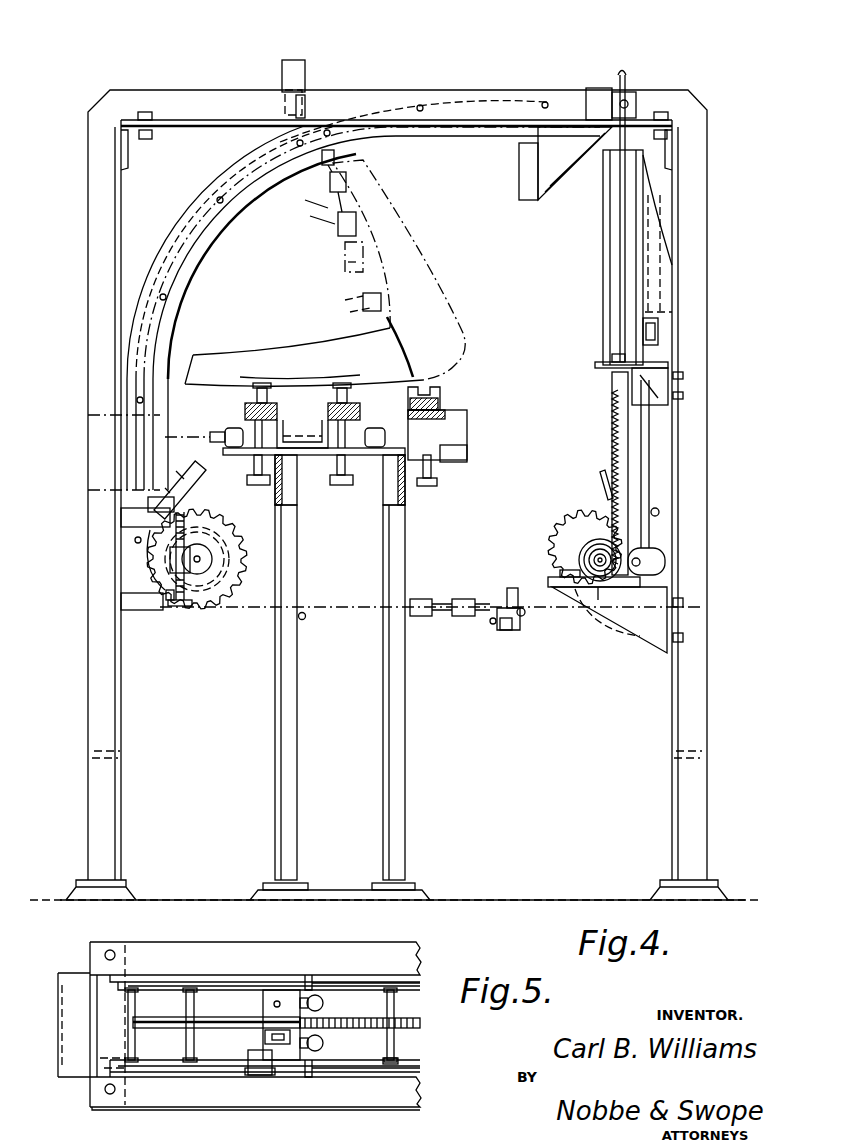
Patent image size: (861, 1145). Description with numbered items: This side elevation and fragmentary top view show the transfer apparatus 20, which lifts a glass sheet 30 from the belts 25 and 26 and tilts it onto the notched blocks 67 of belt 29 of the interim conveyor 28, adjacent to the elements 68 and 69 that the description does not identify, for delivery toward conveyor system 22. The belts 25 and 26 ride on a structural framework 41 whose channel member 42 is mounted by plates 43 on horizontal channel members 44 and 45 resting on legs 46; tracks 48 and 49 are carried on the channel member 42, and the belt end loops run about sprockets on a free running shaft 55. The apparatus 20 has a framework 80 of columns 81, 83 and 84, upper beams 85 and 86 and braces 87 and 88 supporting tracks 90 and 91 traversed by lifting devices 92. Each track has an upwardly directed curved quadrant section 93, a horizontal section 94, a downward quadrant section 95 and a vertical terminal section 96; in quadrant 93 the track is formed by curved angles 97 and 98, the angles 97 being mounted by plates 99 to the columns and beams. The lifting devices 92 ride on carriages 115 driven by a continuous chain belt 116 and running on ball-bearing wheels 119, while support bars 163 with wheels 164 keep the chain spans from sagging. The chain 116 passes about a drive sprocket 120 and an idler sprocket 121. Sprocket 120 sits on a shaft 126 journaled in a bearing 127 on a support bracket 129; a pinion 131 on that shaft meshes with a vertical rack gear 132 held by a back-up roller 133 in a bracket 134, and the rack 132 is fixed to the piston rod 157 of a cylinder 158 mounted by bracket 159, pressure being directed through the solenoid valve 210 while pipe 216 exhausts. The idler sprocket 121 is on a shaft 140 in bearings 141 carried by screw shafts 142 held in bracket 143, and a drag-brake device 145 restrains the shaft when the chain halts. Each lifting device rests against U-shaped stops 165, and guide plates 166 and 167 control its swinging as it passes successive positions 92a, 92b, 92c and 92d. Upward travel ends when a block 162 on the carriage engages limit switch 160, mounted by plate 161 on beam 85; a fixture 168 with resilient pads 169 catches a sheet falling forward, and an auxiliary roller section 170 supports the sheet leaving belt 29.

In FIG. 4, the transfer apparatus 20 is at (143, 78).
In FIG. 4, the conveyor system 22 is at (361, 304).
In FIG. 4, the belt 25 is at (253, 393).
In FIG. 4, the belt 26 is at (351, 393).
In FIG. 4, the interim conveyor 28 is at (444, 396).
In FIG. 4, the belt 29 is at (446, 406).
In FIG. 4, the glass sheet 30 is at (262, 352).
In FIG. 4, the structural framework 41 is at (298, 542).
In FIG. 4, the channel member 42 is at (300, 457).
In FIG. 4, the plates 43 is at (360, 457).
In FIG. 4, the channel member 44 is at (292, 492).
In FIG. 4, the channel member 45 is at (405, 492).
In FIG. 4, the legs or pedestals 46 is at (298, 578).
In FIG. 4, the track 48 is at (245, 410).
In FIG. 4, the track 49 is at (360, 410).
In FIG. 4, the free running shaft 55 is at (300, 428).
In FIG. 4, the notched blocks 67 is at (440, 390).
In FIG. 4, the clamp housing 68 is at (467, 422).
In FIG. 4, the clamp base 69 is at (444, 440).
In FIG. 4, the framework 80 is at (105, 100).
In FIG. 5, the framework 80 is at (75, 960).
In FIG. 4, the column 81 is at (707, 208).
In FIG. 4, the column 83 is at (105, 160).
In FIG. 5, the column 83 is at (90, 1088).
In FIG. 5, the column 84 is at (58, 972).
In FIG. 4, the beam 85 is at (228, 100).
In FIG. 5, the beam 85 is at (135, 1090).
In FIG. 5, the beam 86 is at (245, 965).
In FIG. 4, the braces 87 is at (131, 147).
In FIG. 5, the braces 87 is at (110, 1010).
In FIG. 4, the braces 88 is at (100, 752).
In FIG. 5, the braces 88 is at (70, 1022).
In FIG. 4, the track 90 is at (213, 192).
In FIG. 5, the track 90 is at (185, 1072).
In FIG. 5, the track 91 is at (175, 980).
In FIG. 5, the lifting devices 92 is at (324, 1003).
In FIG. 4, the lifting devices 92a is at (198, 430).
In FIG. 4, the lifting devices 92b is at (340, 232).
In FIG. 4, the lifting devices 92c is at (659, 331).
In FIG. 4, the lifting devices 92d is at (470, 618).
In FIG. 4, the curved quadrant section 93 is at (201, 262).
In FIG. 4, the horizontally disposed section 94 is at (487, 100).
In FIG. 4, the curved quadrant section 95 is at (651, 197).
In FIG. 4, the terminal section 96 is at (660, 312).
In FIG. 4, the angle 97 is at (218, 236).
In FIG. 5, the angle 97 is at (355, 988).
In FIG. 4, the angle 98 is at (182, 228).
In FIG. 5, the angle 98 is at (307, 985).
In FIG. 4, the plates 99 is at (118, 442).
In FIG. 4, the carriage 115 is at (500, 610).
In FIG. 5, the carriage 115 is at (270, 1010).
In FIG. 4, the chain belt 116 is at (349, 605).
In FIG. 5, the chain belt 116 is at (145, 1029).
In FIG. 4, the ball-bearing wheels 119 is at (524, 616).
In FIG. 4, the sprocket 120 is at (588, 520).
In FIG. 4, the sprocket 121 is at (233, 545).
In FIG. 4, the shaft 126 is at (587, 546).
In FIG. 4, the bearing 127 is at (580, 566).
In FIG. 4, the support bracket 129 is at (645, 590).
In FIG. 4, the pinion 131 is at (598, 582).
In FIG. 4, the rack gear 132 is at (612, 402).
In FIG. 4, the back-up flanged roller 133 is at (600, 590).
In FIG. 4, the bracket 134 is at (652, 560).
In FIG. 4, the shaft 140 is at (202, 562).
In FIG. 4, the bearings 141 is at (197, 572).
In FIG. 4, the screw shafts 142 is at (180, 606).
In FIG. 4, the bracket 143 is at (140, 601).
In FIG. 4, the drag-brake device 145 is at (222, 522).
In FIG. 4, the piston rod 157 is at (606, 371).
In FIG. 4, the cylinder 158 is at (610, 257).
In FIG. 4, the bracket 159 is at (668, 380).
In FIG. 4, the limit switch 160 is at (310, 75).
In FIG. 5, the limit switch 160 is at (262, 1062).
In FIG. 4, the plate 161 is at (292, 70).
In FIG. 5, the plate 161 is at (250, 1075).
In FIG. 4, the actuator block 162 is at (505, 631).
In FIG. 5, the actuator block 162 is at (265, 1036).
In FIG. 5, the support bars 163 is at (135, 1005).
In FIG. 4, the ball-bearing wheels 164 is at (420, 103).
In FIG. 5, the ball-bearing wheels 164 is at (396, 1060).
In FIG. 4, the U-shaped stops 165 is at (512, 586).
In FIG. 4, the guide plates 166 is at (600, 476).
In FIG. 4, the guide plates 167 is at (200, 472).
In FIG. 4, the fixture 168 is at (548, 190).
In FIG. 4, the resilient pads 169 is at (519, 176).
In FIG. 4, the auxiliary roller section 170 is at (343, 268).
In FIG. 4, the solenoid pressure valve 210 is at (633, 92).
In FIG. 4, the pipe 216 is at (623, 283).